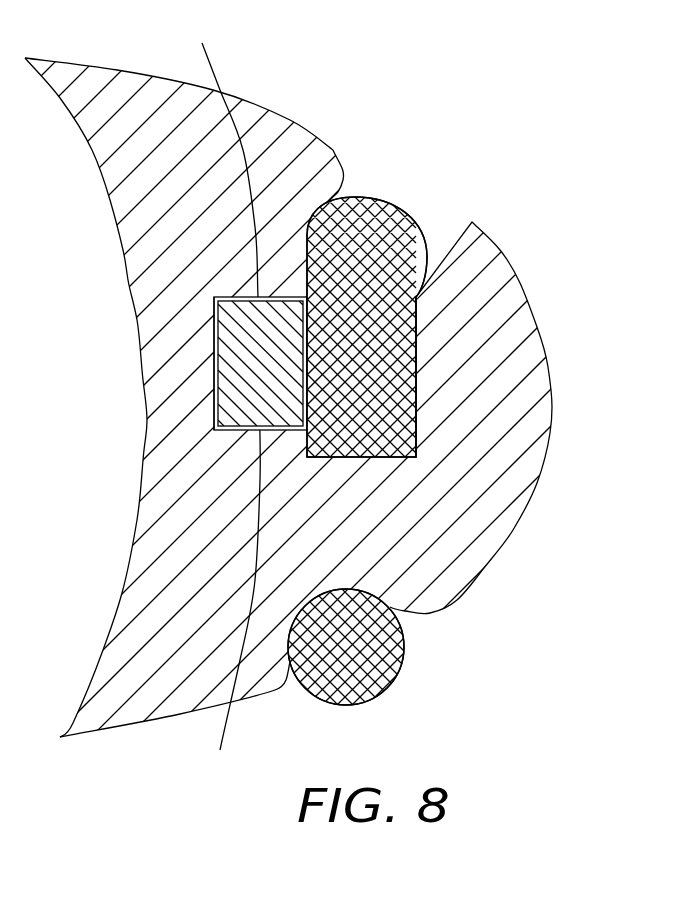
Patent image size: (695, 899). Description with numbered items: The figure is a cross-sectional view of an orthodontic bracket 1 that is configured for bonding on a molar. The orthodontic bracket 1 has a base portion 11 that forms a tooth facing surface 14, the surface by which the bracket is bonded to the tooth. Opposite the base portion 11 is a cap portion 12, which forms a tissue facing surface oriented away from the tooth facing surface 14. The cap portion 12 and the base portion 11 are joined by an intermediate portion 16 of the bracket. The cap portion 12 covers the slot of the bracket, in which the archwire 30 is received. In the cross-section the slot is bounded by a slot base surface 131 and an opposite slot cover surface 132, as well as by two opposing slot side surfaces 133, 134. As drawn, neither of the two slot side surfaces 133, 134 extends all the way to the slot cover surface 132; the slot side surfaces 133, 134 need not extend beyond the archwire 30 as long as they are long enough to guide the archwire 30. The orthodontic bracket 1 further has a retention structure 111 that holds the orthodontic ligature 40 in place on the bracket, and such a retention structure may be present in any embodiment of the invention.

The orthodontic bracket 1 is at (318, 399).
The base portion 11 is at (273, 127).
The cap portion 12 is at (515, 403).
The tooth facing surface 14 is at (137, 517).
The intermediate portion 16 is at (378, 552).
The archwire 30 is at (237, 376).
The orthodontic ligature 40 is at (395, 240).
The retention structure 111 is at (332, 178).
The slot base surface 131 is at (215, 325).
The slot cover surface 132 is at (417, 345).
The slot side surface 133 is at (227, 634).
The slot side surface 134 is at (216, 245).